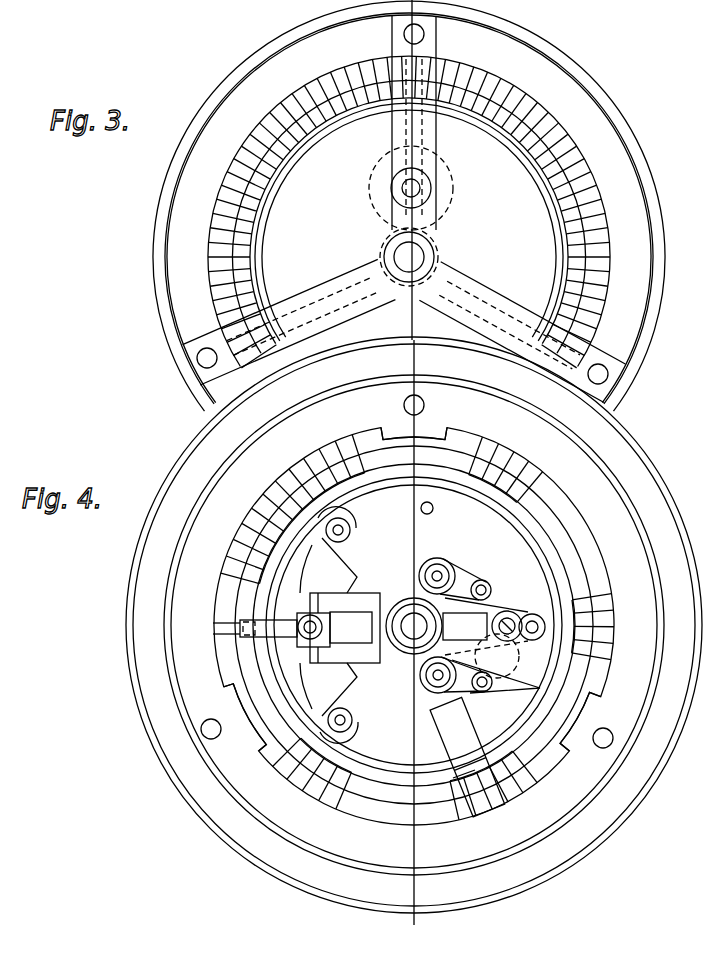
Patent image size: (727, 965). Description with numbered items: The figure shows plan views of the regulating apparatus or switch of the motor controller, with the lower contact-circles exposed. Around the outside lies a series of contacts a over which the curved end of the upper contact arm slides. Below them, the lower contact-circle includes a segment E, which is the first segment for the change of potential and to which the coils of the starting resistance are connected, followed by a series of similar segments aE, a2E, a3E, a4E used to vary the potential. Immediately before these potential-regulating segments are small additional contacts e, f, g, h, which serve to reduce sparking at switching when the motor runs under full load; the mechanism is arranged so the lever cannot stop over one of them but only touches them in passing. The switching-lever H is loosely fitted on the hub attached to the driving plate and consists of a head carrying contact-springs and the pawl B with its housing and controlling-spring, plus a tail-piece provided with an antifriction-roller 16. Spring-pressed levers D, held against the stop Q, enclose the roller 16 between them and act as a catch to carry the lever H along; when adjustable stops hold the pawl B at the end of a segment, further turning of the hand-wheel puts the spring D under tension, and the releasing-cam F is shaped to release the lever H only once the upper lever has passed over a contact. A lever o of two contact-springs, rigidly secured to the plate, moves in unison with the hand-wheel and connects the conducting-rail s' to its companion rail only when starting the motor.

In FIG. 3, the contacts a is at (572, 148).
In FIG. 4, the contacts a is at (282, 482).
In FIG. 4, the segment E is at (425, 440).
In FIG. 4, the additional contact e is at (515, 463).
In FIG. 4, the segment aE is at (582, 536).
In FIG. 4, the additional contact f is at (610, 634).
In FIG. 4, the segment a2E is at (572, 722).
In FIG. 4, the segment a3E is at (392, 822).
In FIG. 4, the segment a4E is at (262, 752).
In FIG. 4, the additional contact g is at (498, 808).
In FIG. 4, the additional contact h is at (294, 792).
In FIG. 4, the pawl B is at (296, 628).
In FIG. 4, the releasing-cam F is at (329, 625).
In FIG. 4, the switching-lever H is at (485, 626).
In FIG. 4, the stop Q is at (531, 636).
In FIG. 4, the antifriction-roller 16 is at (502, 658).
In FIG. 4, the spring-pressed levers D is at (470, 582).
In FIG. 4, the lever o is at (467, 756).
In FIG. 4, the conducting strip or rail s' is at (451, 811).